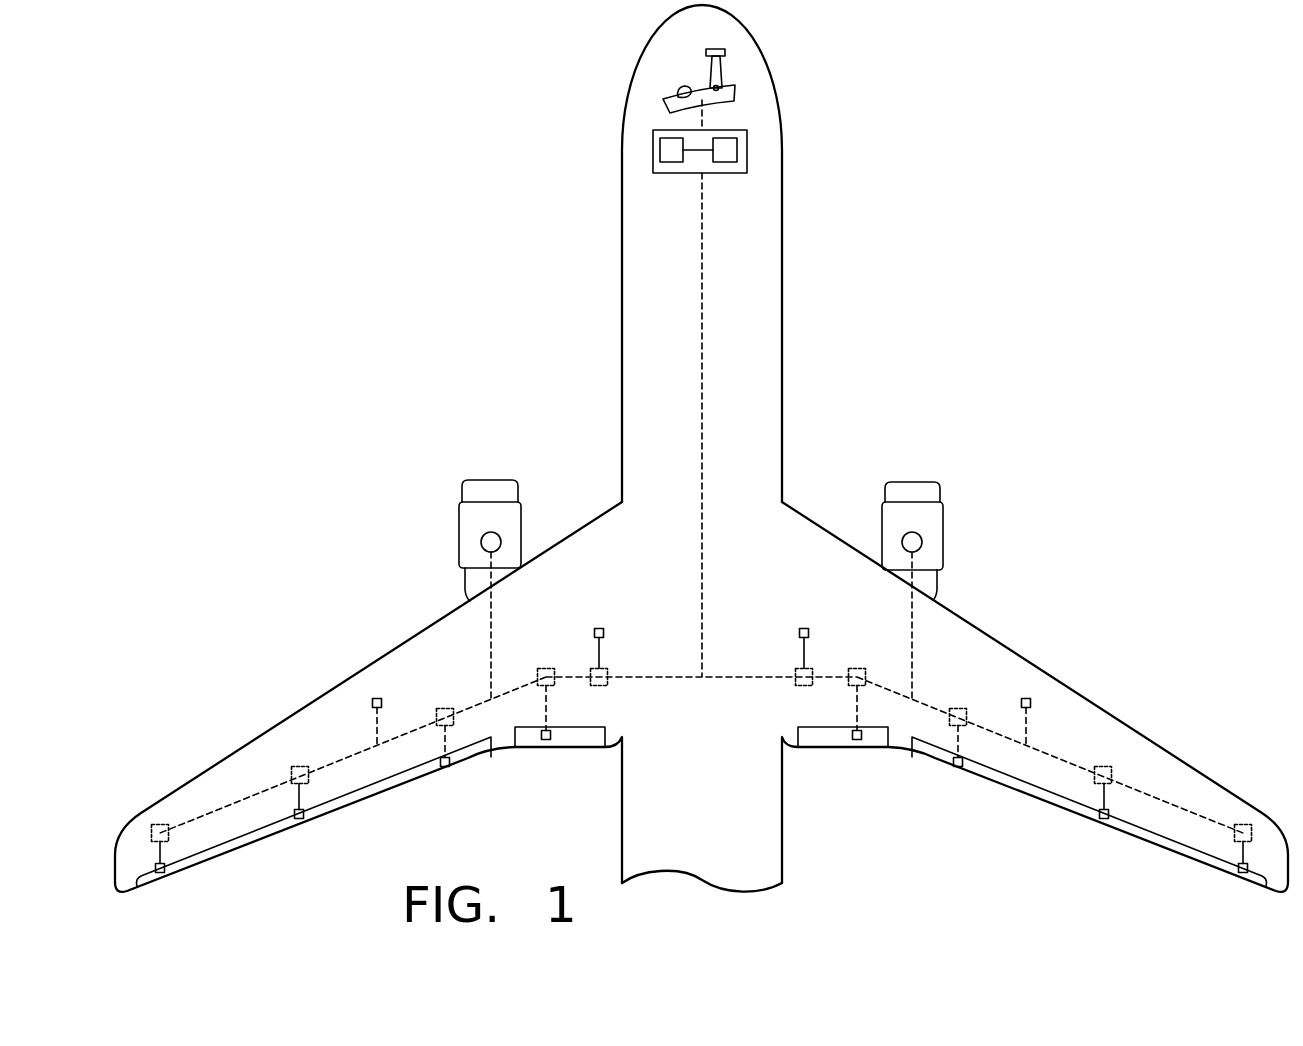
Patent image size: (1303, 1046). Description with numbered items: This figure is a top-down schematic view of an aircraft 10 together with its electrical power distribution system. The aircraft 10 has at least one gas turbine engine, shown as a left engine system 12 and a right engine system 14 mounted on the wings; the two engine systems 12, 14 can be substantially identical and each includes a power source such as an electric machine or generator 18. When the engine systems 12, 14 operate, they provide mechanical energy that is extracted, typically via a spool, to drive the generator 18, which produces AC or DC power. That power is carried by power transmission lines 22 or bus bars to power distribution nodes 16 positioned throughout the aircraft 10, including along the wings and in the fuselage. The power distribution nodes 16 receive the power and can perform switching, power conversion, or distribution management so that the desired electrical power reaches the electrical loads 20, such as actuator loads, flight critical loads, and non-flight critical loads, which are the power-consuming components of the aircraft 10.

The aircraft 10 is at (499, 126).
The left engine system 12 is at (487, 480).
The right engine system 14 is at (940, 484).
The power distribution node 16 is at (553, 686).
The generator 18 is at (496, 532).
The electrical load 20 is at (668, 165).
The power transmission line 22 is at (700, 272).